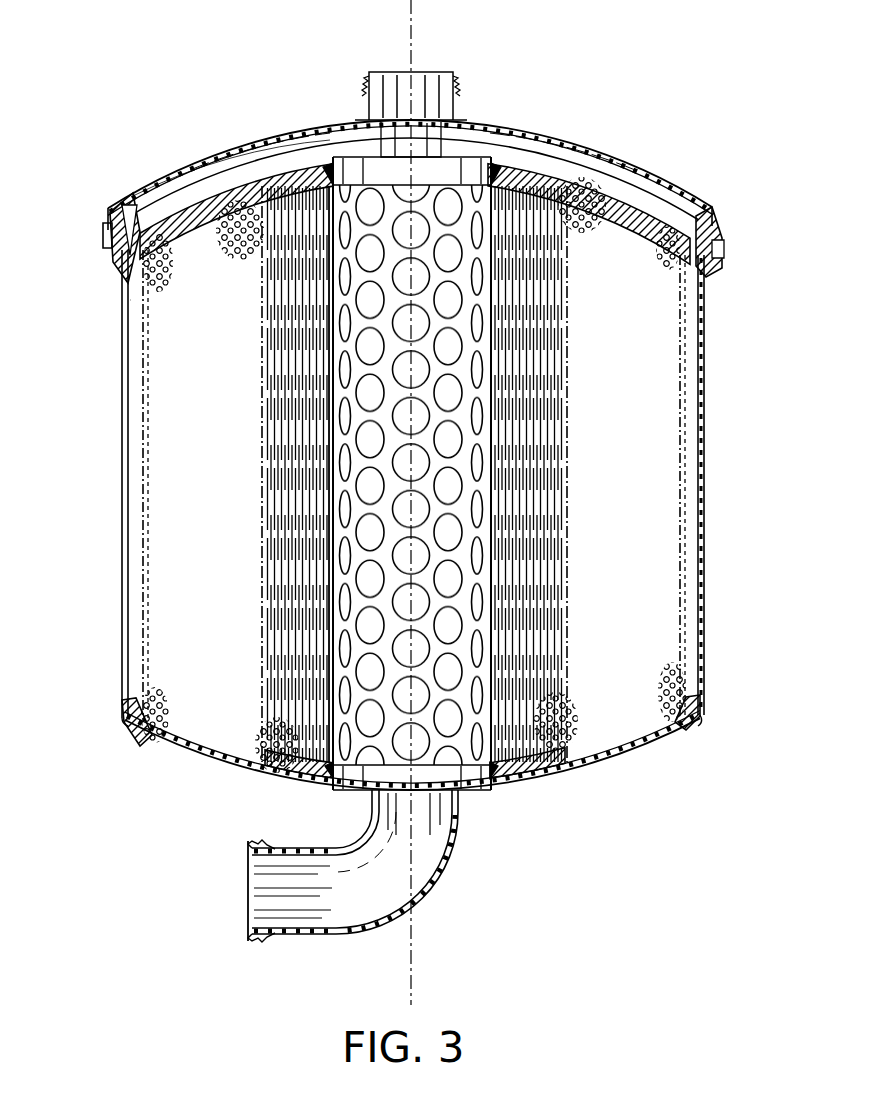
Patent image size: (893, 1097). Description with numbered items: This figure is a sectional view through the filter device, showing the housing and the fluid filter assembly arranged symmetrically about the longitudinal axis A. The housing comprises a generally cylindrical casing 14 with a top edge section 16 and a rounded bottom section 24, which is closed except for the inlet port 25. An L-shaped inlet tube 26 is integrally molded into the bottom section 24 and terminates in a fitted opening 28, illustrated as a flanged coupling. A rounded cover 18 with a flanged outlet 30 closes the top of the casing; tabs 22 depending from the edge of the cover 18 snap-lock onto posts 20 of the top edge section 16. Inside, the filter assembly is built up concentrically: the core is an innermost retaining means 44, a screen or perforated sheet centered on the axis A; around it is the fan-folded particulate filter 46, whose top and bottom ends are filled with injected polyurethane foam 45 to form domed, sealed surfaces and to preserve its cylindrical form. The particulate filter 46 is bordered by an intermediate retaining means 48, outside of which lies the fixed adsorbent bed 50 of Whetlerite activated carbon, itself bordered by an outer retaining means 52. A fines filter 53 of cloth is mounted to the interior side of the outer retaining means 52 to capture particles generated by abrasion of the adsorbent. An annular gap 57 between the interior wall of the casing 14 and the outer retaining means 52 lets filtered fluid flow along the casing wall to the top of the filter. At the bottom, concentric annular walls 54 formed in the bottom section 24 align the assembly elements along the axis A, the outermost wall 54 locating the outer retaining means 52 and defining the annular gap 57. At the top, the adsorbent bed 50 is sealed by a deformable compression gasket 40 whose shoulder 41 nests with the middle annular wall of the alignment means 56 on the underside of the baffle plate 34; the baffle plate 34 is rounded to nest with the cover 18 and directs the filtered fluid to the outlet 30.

The longitudinal axis A is at (416, 44).
The casing 14 is at (704, 527).
The top edge section 16 is at (710, 273).
The cover 18 is at (525, 122).
The posts 20 is at (105, 246).
The tabs 22 is at (110, 222).
The bottom section 24 is at (504, 790).
The inlet port 25 is at (418, 798).
The inlet tube 26 is at (388, 888).
The fitted opening 28 is at (254, 942).
The outlet 30 is at (400, 76).
The baffle plate 34 is at (610, 178).
The sealing means 40 is at (674, 300).
The shoulder 41 is at (592, 186).
The innermost retaining means 44 is at (352, 527).
The polyurethane foam 45 is at (256, 248).
The particulate filter 46 is at (292, 442).
The intermediate retaining means 48 is at (260, 380).
The fixed adsorbent bed 50 is at (182, 268).
The outer retaining means 52 is at (141, 388).
The fines filter 53 is at (145, 472).
The annular walls 54 is at (344, 781).
The alignment means 56 is at (313, 141).
The annular gap 57 is at (136, 362).